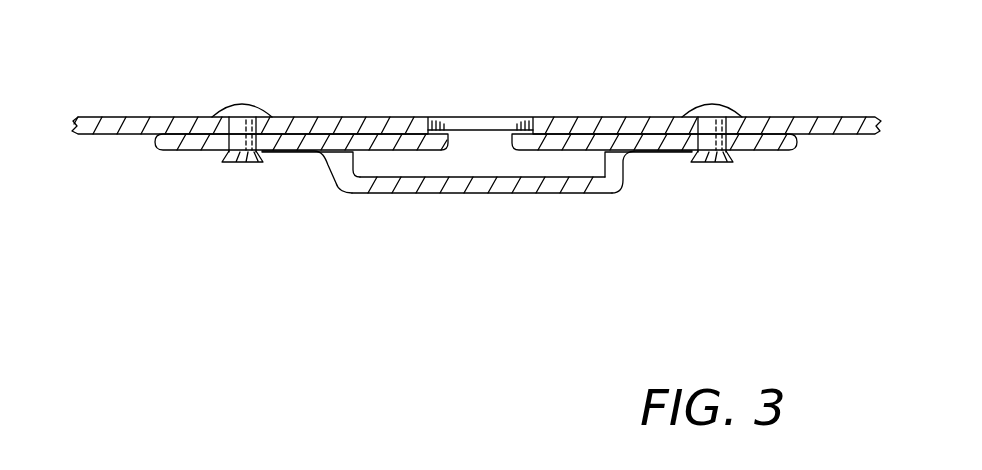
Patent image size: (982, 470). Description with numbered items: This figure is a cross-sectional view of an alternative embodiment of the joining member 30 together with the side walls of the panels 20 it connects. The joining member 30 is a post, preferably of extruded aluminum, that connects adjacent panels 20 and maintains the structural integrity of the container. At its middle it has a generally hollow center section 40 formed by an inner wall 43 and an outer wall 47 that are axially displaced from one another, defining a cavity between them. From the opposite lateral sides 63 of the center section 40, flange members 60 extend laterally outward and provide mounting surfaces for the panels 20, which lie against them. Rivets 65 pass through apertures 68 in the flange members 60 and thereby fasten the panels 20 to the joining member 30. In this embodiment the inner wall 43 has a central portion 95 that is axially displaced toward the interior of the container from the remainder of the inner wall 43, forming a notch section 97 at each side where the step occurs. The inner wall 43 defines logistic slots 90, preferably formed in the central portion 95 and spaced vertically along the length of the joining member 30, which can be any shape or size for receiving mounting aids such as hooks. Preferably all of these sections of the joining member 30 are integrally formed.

The panel 20 is at (152, 117).
The joining member 30 is at (476, 206).
The center section 40 is at (477, 242).
The inner wall 43 is at (566, 140).
The outer wall 47 is at (404, 186).
The flange member 60 is at (283, 146).
The lateral side 63 is at (337, 160).
The rivet 65 is at (251, 104).
The aperture 68 is at (230, 142).
The logistic slot 90 is at (487, 113).
The central portion 95 is at (479, 232).
The notch section 97 is at (430, 117).